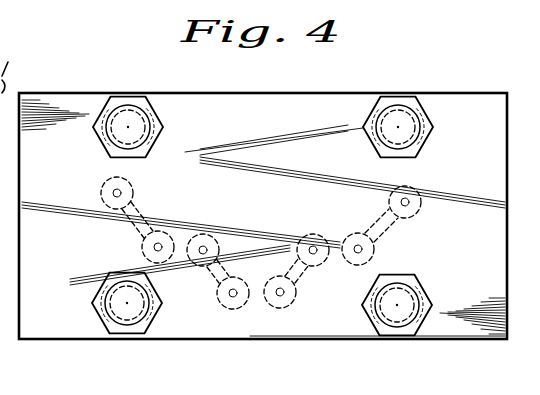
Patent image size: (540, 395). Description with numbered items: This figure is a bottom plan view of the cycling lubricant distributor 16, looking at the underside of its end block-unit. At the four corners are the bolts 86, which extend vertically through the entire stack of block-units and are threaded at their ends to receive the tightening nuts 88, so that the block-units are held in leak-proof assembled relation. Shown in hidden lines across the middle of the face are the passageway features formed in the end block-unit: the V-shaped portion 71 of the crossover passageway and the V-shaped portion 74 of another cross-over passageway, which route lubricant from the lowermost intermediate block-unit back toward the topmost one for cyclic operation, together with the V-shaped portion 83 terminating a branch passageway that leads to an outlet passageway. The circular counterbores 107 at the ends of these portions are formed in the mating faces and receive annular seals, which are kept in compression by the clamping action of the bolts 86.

The cycling lubricant distributor 16 is at (507, 140).
The tightening nuts 88 is at (148, 110).
The bolts 86 is at (137, 132).
The counterbores 107 is at (104, 181).
The V-shaped portion 83 is at (148, 221).
The V-shaped portion 74 is at (221, 309).
The V-shaped portion 71 is at (299, 292).